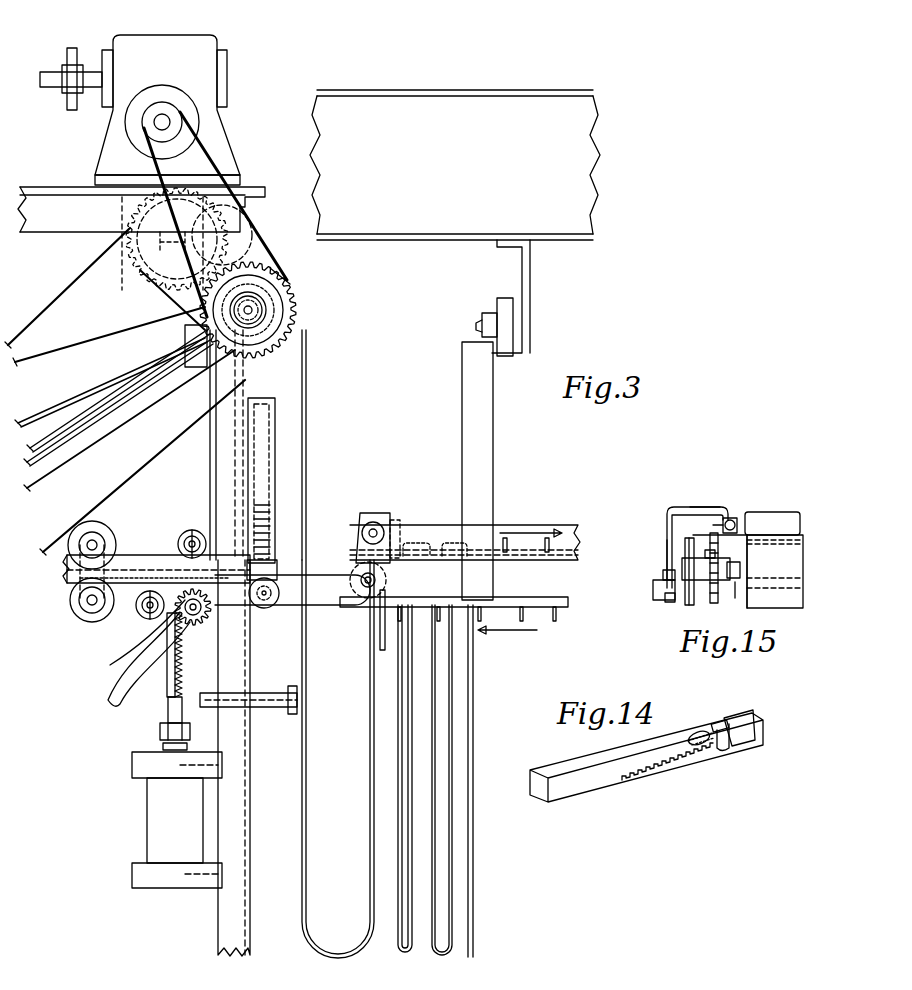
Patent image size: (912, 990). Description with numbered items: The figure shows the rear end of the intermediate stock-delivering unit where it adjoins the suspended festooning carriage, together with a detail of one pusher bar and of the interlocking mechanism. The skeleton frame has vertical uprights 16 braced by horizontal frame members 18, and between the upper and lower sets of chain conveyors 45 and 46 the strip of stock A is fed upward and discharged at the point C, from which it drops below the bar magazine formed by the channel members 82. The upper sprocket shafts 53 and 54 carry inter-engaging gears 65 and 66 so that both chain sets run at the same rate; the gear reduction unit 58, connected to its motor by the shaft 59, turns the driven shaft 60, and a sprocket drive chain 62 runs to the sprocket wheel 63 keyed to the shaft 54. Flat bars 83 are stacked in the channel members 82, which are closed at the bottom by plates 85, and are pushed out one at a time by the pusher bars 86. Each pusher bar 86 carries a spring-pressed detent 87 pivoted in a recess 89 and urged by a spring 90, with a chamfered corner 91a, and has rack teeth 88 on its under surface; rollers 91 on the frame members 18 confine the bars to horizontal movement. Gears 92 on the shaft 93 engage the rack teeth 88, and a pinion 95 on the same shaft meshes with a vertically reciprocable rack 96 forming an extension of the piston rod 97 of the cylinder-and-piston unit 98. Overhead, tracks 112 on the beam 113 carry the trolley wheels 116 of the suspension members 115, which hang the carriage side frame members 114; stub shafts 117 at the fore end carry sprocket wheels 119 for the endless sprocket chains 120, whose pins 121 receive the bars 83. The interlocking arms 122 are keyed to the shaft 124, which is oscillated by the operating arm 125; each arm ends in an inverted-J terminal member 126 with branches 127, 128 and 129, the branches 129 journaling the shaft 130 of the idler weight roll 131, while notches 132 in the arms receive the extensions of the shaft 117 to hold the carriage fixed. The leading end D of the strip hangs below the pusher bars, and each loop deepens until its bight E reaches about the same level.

In FIG. 3, the vertical uprights 16 is at (230, 922).
In FIG. 3, the horizontal frame members 18 is at (120, 560).
In FIG. 3, the upper chain conveyor 45 is at (50, 306).
In FIG. 3, the lower chain conveyor 46 is at (133, 493).
In FIG. 3, the upper sprocket shaft 53 is at (180, 240).
In FIG. 3, the chain-drive shaft 54 is at (252, 310).
In FIG. 3, the gear reduction unit 58 is at (163, 53).
In FIG. 3, the shaft 59 is at (52, 78).
In FIG. 3, the driven shaft 60 is at (165, 120).
In FIG. 3, the sprocket drive chain 62 is at (212, 157).
In FIG. 3, the sprocket wheel 63 is at (283, 269).
In FIG. 3, the gear 65 is at (200, 283).
In FIG. 3, the gear 66 is at (297, 315).
In FIG. 3, the channel member 82 is at (262, 420).
In FIG. 3, the flat bars 83 is at (468, 538).
In FIG. 15, the flat bars 83 is at (780, 545).
In FIG. 3, the plates 85 is at (268, 545).
In FIG. 3, the pusher bar 86 is at (255, 570).
In FIG. 14, the pusher bar 86 is at (582, 788).
In FIG. 3, the spring-pressed detent 87 is at (250, 562).
In FIG. 14, the spring-pressed detent 87 is at (742, 716).
In FIG. 3, the rack teeth 88 is at (133, 585).
In FIG. 14, the rack teeth 88 is at (655, 777).
In FIG. 14, the recess 89 is at (742, 742).
In FIG. 14, the spring 90 is at (703, 732).
In FIG. 3, the rollers 91 is at (180, 533).
In FIG. 14, the chamfered corner 91a is at (722, 722).
In FIG. 3, the gears 92 is at (205, 615).
In FIG. 3, the gear shaft 93 is at (118, 661).
In FIG. 3, the pinion gear 95 is at (197, 630).
In FIG. 3, the rack 96 is at (170, 690).
In FIG. 3, the piston rod 97 is at (168, 722).
In FIG. 3, the cylinder-and-piston unit 98 is at (177, 820).
In FIG. 3, the tracks 112 is at (532, 275).
In FIG. 3, the overhead beam 113 is at (455, 165).
In FIG. 15, the side frame members 114 is at (668, 601).
In FIG. 3, the vertical suspension members 115 is at (473, 418).
In FIG. 3, the trolley wheel 116 is at (508, 300).
In FIG. 3, the stub shafts 117 is at (362, 590).
In FIG. 15, the stub shafts 117 is at (665, 578).
In FIG. 3, the forward sprocket wheels 119 is at (384, 615).
In FIG. 15, the forward sprocket wheels 119 is at (711, 600).
In FIG. 3, the sprocket chains 120 is at (500, 631).
In FIG. 15, the sprocket chains 120 is at (716, 553).
In FIG. 3, the pins 121 is at (557, 614).
In FIG. 15, the pins 121 is at (686, 536).
In FIG. 3, the arm 122 is at (348, 566).
In FIG. 3, the shaft 124 is at (275, 608).
In FIG. 15, the shaft 124 is at (655, 593).
In FIG. 3, the operating arm 125 is at (110, 698).
In FIG. 3, the terminal member 126 is at (362, 520).
In FIG. 15, the terminal member 126 is at (668, 514).
In FIG. 15, the branch 127 is at (666, 545).
In FIG. 15, the branch 128 is at (700, 507).
In FIG. 15, the terminal branch 129 is at (722, 525).
In FIG. 3, the shaft 130 is at (374, 530).
In FIG. 15, the shaft 130 is at (731, 518).
In FIG. 3, the idler weight roll 131 is at (383, 525).
In FIG. 15, the idler weight roll 131 is at (790, 514).
In FIG. 3, the notches 132 is at (455, 597).
In FIG. 15, the notches 132 is at (663, 572).
In FIG. 3, the strip of stock A is at (303, 367).
In FIG. 15, the strip of stock A is at (770, 552).
In FIG. 3, the discharge point C is at (265, 302).
In FIG. 3, the leading end of strip D is at (474, 955).
In FIG. 3, the bight E is at (445, 958).